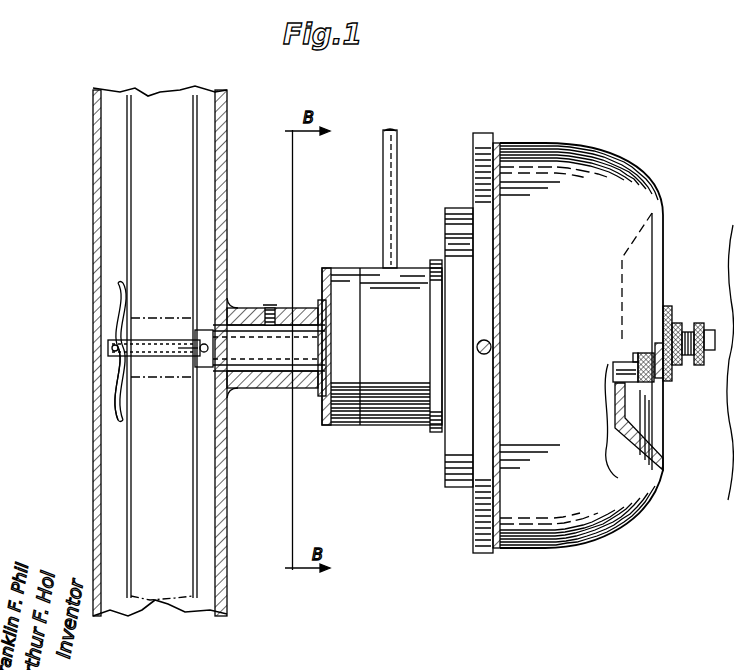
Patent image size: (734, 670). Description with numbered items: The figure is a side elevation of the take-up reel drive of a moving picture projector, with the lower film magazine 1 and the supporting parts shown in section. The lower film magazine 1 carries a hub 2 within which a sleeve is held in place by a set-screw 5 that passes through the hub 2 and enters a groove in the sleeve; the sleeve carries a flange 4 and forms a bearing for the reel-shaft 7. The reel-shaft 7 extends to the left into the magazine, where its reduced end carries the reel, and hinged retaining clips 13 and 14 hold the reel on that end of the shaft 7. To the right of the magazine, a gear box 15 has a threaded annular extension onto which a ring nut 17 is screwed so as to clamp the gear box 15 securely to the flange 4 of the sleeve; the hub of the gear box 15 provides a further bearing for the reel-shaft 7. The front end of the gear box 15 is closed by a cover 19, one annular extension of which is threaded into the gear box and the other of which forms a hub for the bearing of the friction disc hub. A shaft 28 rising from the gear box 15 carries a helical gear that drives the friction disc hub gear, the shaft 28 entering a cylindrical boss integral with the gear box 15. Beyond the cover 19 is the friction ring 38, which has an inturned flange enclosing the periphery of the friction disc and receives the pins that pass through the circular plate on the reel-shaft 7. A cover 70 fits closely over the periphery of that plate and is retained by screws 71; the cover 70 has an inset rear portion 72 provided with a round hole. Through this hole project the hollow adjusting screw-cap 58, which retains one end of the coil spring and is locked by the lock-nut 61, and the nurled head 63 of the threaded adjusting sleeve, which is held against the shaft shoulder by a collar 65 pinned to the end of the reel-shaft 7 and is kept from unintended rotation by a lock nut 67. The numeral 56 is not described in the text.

The lower film magazine 1 is at (223, 472).
The hub 2 is at (283, 389).
The flange 4 is at (324, 388).
The set-screw 5 is at (279, 300).
The reel-shaft 7 is at (233, 345).
The hinged retaining clip 13 is at (117, 304).
The hinged retaining clip 14 is at (120, 390).
The gear box 15 is at (373, 268).
The ring nut 17 is at (336, 268).
The cover 19 is at (436, 262).
The shaft 28 is at (385, 177).
The friction ring 38 is at (457, 208).
The terminal nut 56 is at (648, 383).
The adjusting screw-cap 58 is at (625, 372).
The lock-nut 61 is at (667, 377).
The nurled head 63 is at (678, 330).
The collar 65 is at (700, 340).
The lock nut 67 is at (668, 330).
The cover 70 is at (562, 528).
The screw 71 is at (492, 347).
The inset rear portion 72 is at (733, 425).